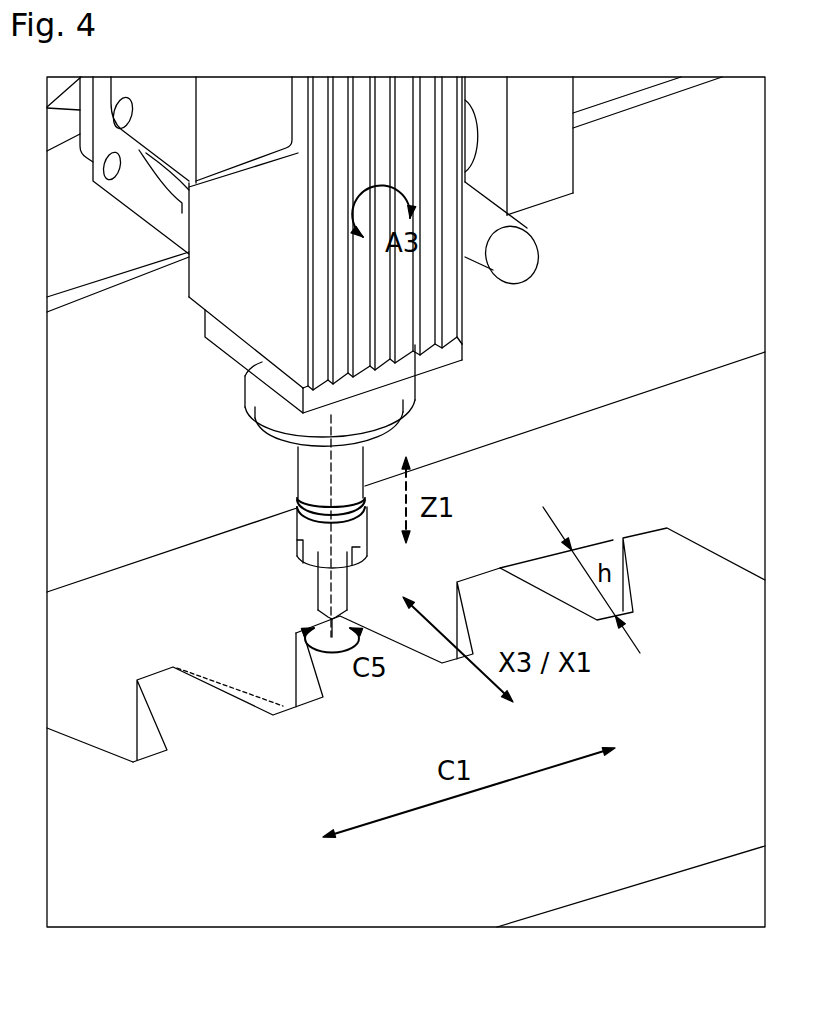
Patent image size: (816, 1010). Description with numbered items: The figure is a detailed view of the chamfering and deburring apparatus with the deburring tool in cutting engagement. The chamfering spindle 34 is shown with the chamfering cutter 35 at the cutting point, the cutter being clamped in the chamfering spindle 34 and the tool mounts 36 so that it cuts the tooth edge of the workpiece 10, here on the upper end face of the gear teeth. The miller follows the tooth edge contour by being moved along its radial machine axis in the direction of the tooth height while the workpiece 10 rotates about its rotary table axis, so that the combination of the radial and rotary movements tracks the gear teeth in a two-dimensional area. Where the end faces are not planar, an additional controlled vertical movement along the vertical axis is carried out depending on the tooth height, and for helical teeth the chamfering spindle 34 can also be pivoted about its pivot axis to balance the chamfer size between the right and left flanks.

The chamfering spindle 34 is at (270, 286).
The tool mounts 36 is at (310, 483).
The chamfering cutter 35 is at (320, 598).
The workpiece 10 is at (234, 855).